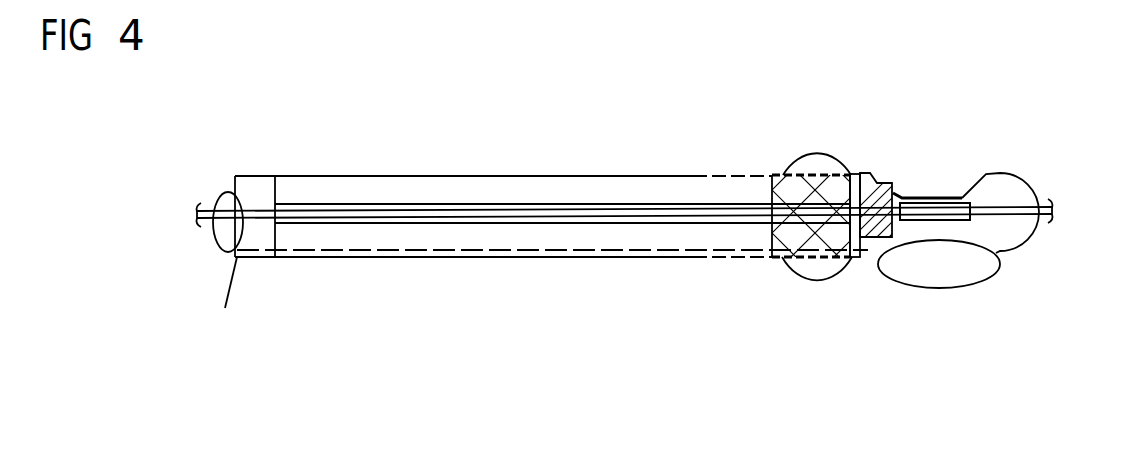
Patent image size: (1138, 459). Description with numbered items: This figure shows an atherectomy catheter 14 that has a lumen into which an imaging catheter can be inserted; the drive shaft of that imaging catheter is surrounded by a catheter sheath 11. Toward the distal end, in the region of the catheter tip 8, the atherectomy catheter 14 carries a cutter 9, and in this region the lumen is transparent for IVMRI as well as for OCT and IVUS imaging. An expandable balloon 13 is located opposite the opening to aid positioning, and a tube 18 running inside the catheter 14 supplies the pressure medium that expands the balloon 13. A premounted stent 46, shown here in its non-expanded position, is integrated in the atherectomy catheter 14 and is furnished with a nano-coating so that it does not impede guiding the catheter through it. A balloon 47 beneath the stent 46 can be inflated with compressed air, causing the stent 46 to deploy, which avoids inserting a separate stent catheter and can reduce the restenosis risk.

The atherectomy catheter 14 is at (394, 127).
The catheter sheath 11 is at (623, 177).
The premounted stent 46 is at (773, 190).
The balloon 47 is at (818, 150).
The cutter 9 is at (880, 183).
The catheter tip 8 is at (942, 182).
The expandable balloon 13 is at (940, 277).
The tube 18 is at (230, 287).